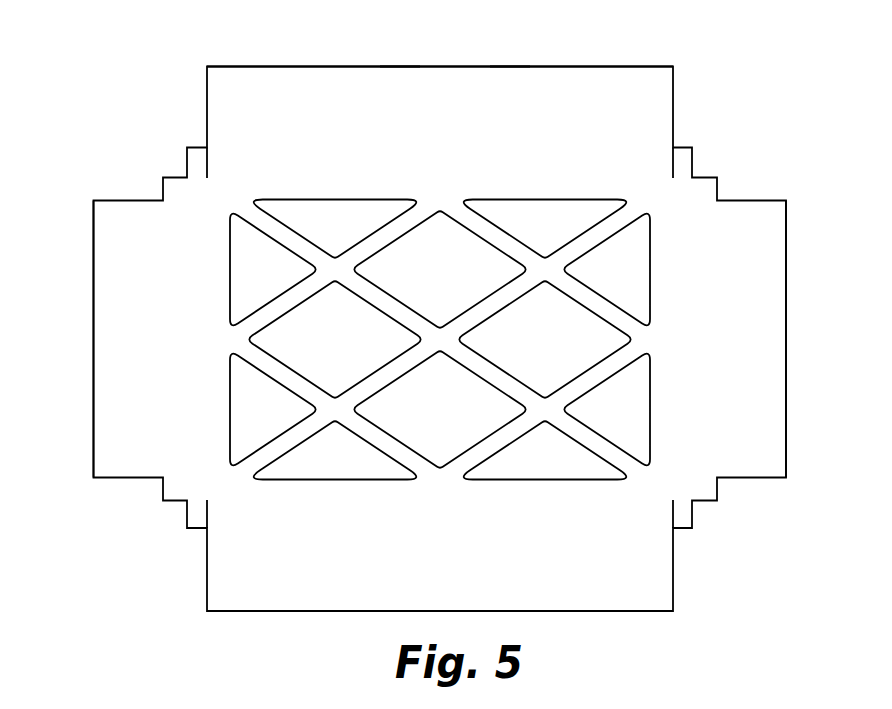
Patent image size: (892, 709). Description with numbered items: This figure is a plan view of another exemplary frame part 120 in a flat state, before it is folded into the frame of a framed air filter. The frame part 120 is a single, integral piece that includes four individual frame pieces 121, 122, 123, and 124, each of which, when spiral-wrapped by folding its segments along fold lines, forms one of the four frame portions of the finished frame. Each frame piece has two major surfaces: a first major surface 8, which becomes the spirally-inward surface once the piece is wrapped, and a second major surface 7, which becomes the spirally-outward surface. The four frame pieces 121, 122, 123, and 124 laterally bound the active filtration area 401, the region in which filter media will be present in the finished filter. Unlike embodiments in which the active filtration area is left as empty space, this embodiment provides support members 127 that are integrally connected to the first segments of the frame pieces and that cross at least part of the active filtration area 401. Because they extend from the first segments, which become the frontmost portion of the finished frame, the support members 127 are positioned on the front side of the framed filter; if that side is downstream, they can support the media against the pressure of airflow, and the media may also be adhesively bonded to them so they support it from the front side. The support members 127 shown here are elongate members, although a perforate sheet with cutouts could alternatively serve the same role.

The frame part 120 is at (703, 65).
The frame piece 121 is at (291, 85).
The second major surface 7 is at (380, 83).
The first major surface 8 is at (510, 82).
The frame piece 122 is at (765, 333).
The frame piece 123 is at (588, 587).
The frame piece 124 is at (107, 325).
The support member 127 is at (493, 237).
The active filtration area 401 is at (312, 349).